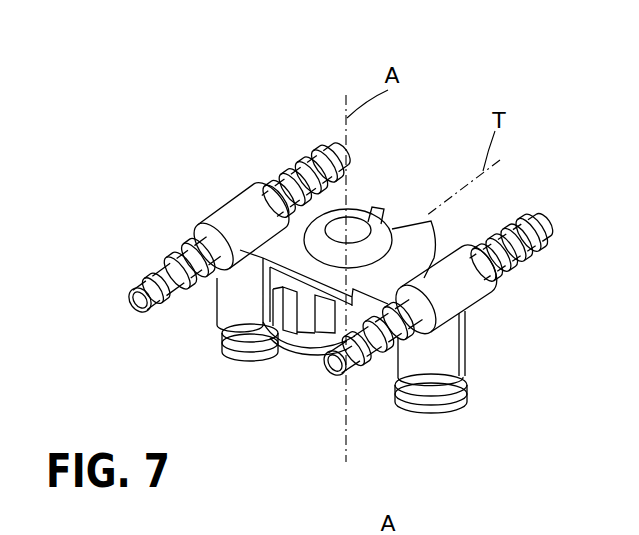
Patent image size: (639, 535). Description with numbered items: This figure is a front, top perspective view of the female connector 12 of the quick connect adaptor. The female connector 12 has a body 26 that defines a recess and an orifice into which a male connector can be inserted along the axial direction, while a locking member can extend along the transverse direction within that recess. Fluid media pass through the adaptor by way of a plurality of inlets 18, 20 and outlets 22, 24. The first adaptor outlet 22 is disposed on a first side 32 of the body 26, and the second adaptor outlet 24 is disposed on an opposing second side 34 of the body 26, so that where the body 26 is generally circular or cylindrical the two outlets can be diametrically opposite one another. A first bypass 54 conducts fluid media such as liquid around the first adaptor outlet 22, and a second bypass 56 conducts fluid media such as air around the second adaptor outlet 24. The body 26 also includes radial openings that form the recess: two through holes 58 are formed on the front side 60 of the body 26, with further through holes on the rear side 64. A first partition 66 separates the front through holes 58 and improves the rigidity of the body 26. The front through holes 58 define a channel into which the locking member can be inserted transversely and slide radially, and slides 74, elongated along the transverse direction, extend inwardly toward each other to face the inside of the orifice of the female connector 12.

The female connector 12 is at (188, 217).
The inlet 18 is at (133, 294).
The inlet 20 is at (352, 378).
The first adaptor outlet 22 is at (233, 350).
The second adaptor outlet 24 is at (428, 407).
The body 26 is at (351, 223).
The first side 32 is at (262, 200).
The second side 34 is at (468, 285).
The first bypass 54 is at (340, 160).
The second bypass 56 is at (551, 211).
The front through holes 58 is at (283, 335).
The front side 60 is at (290, 348).
The rear side 64 is at (460, 224).
The first partition 66 is at (300, 356).
The slides 74 is at (262, 288).